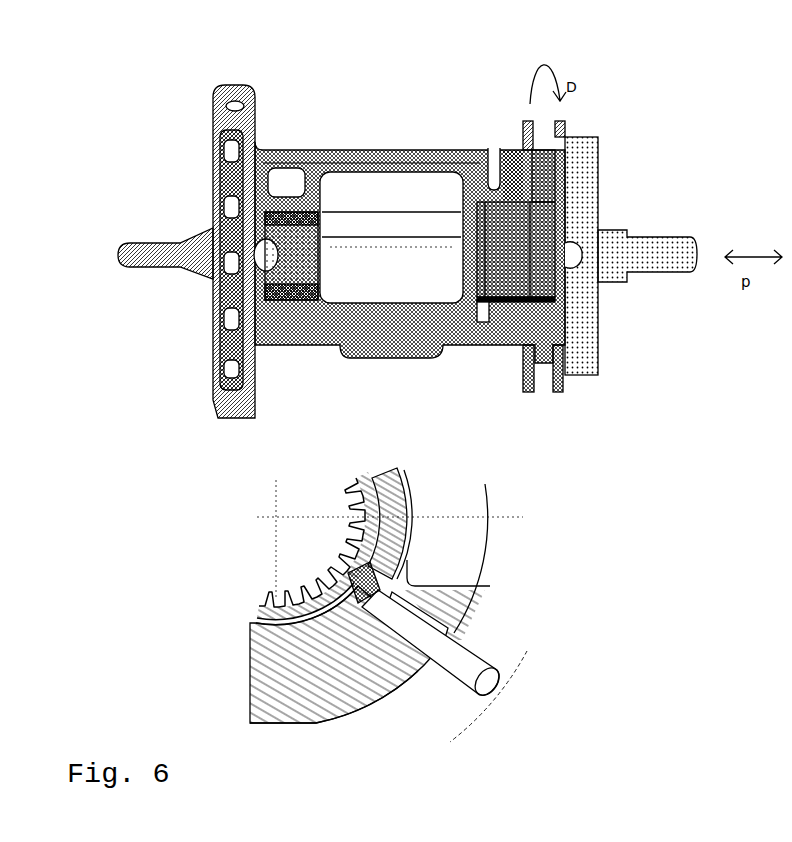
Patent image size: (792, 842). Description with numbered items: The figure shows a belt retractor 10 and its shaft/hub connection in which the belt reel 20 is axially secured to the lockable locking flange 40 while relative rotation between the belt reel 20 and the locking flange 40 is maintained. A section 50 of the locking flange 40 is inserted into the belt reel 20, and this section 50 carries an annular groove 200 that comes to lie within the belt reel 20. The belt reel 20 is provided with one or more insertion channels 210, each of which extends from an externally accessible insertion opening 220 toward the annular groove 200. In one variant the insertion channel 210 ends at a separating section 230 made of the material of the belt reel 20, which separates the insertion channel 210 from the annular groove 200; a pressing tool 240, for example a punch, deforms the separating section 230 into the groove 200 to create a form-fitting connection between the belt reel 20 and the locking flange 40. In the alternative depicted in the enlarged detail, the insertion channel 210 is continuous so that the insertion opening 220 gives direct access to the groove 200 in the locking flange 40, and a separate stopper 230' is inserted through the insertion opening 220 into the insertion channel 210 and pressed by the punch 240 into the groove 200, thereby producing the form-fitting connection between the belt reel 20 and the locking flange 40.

The belt retractor 10 is at (142, 111).
The belt reel 20 is at (310, 688).
The locking flange 40 is at (360, 540).
The section of the locking flange 50 is at (370, 484).
The annular groove 200 is at (462, 200).
The insertion channel 210 is at (501, 148).
The insertion opening 220 is at (498, 155).
The separating section 230 is at (451, 151).
The stopper 230' is at (335, 572).
The pressing tool 240 is at (495, 690).